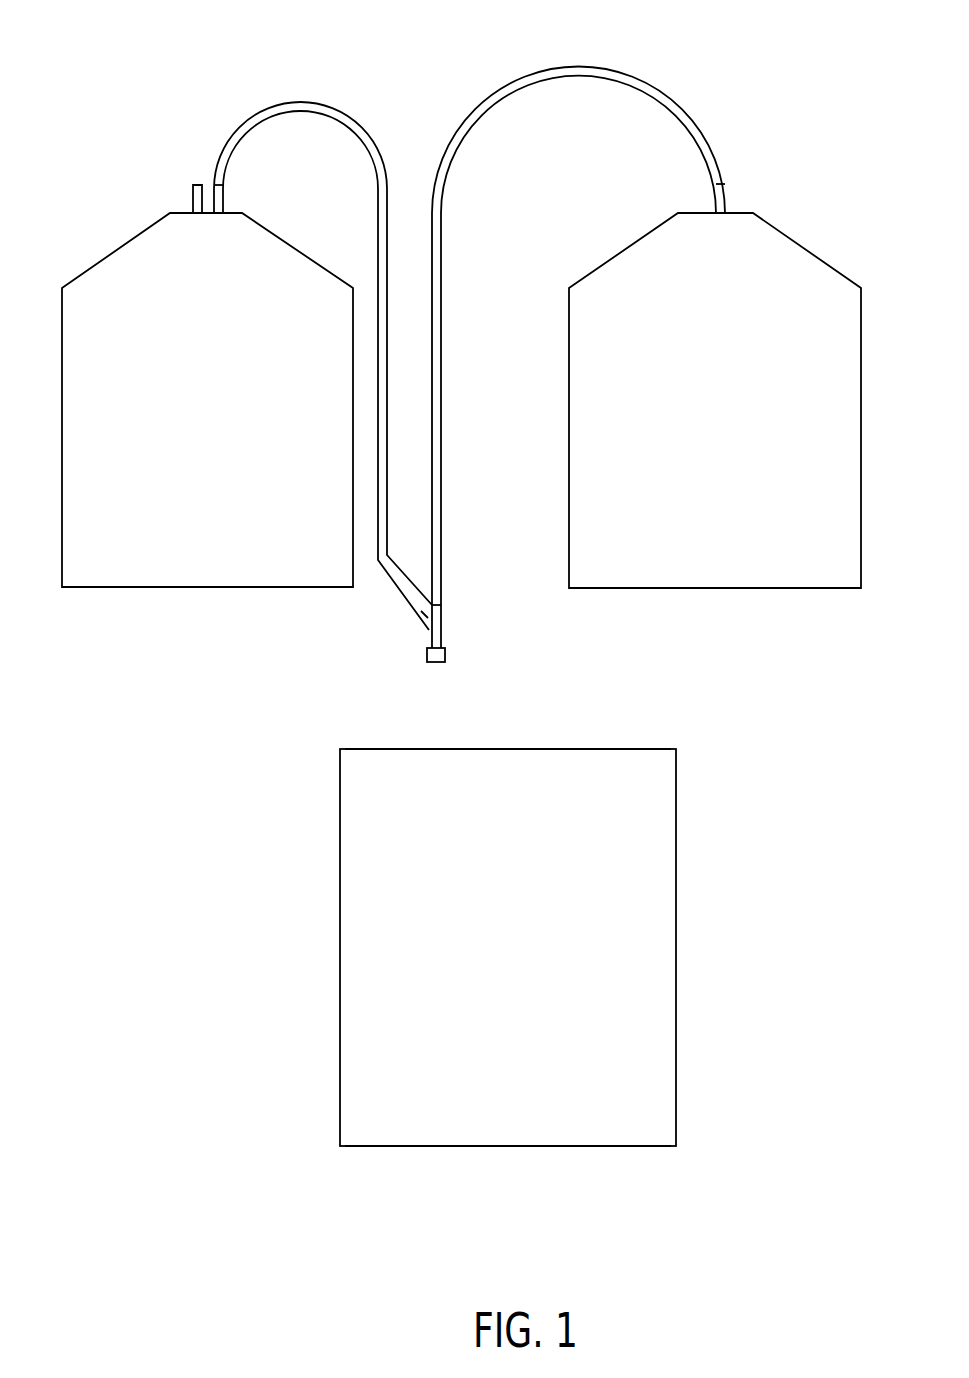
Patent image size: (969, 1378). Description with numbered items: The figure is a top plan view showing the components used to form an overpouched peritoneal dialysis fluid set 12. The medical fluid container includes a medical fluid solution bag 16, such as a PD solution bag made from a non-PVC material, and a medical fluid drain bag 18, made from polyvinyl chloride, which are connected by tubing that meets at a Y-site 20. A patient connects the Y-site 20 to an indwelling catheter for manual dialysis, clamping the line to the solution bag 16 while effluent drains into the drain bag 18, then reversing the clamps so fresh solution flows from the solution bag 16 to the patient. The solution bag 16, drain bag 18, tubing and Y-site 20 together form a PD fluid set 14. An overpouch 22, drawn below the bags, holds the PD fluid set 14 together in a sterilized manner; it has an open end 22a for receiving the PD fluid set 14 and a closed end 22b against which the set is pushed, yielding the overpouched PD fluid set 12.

The overpouched peritoneal dialysis fluid set 12 is at (768, 976).
The PD fluid set 14 is at (497, 84).
The medical fluid solution bag 16 is at (218, 404).
The medical fluid drain bag 18 is at (731, 404).
The Y-site 20 is at (443, 640).
The overpouch 22 is at (516, 958).
The open end 22a is at (525, 749).
The closed end 22b is at (544, 1147).